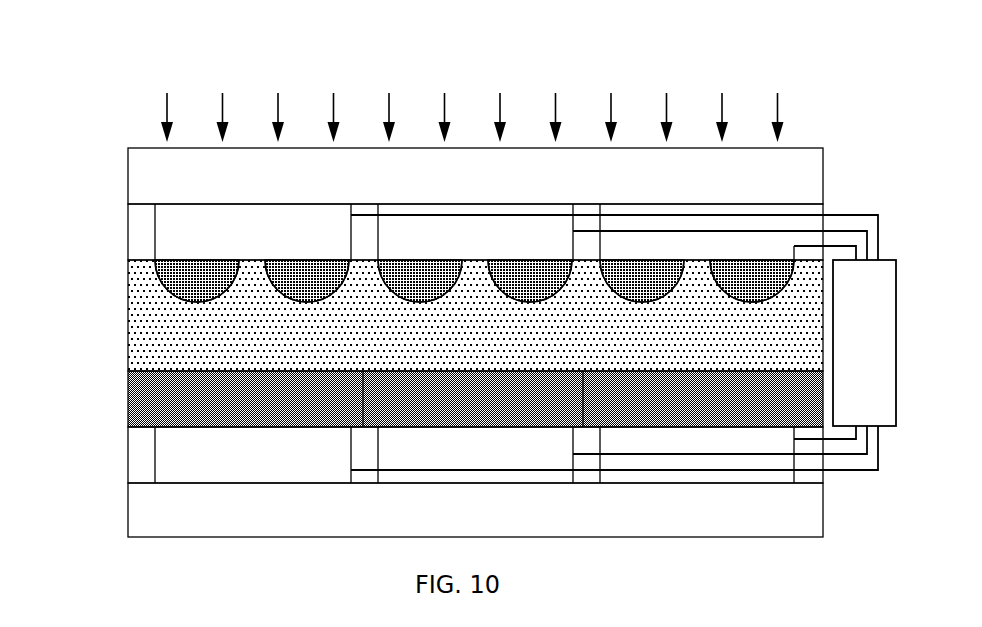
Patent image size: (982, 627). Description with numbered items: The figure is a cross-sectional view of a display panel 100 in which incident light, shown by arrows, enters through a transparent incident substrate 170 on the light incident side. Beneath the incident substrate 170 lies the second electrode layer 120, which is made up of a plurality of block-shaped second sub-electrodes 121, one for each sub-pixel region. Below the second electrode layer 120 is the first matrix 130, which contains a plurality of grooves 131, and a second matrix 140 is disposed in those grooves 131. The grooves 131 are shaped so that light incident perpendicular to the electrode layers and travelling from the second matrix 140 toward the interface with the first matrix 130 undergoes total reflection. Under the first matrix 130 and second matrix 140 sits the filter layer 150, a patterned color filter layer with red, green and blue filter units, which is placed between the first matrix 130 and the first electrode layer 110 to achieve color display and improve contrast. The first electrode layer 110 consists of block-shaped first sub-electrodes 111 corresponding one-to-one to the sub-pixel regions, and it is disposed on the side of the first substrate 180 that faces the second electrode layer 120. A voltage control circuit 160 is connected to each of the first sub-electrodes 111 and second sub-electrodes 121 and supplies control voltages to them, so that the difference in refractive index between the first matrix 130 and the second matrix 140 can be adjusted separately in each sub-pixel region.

The display panel 100 is at (85, 128).
The first electrode layer 110 is at (128, 465).
The first sub-electrodes 111 is at (155, 430).
The second electrode layer 120 is at (128, 240).
The second sub-electrodes 121 is at (155, 207).
The first matrix 130 is at (155, 350).
The grooves 131 is at (177, 298).
The second matrix 140 is at (197, 270).
The filter layer 150 is at (145, 400).
The voltage control circuit 160 is at (882, 353).
The incident substrate 170 is at (145, 158).
The first substrate 180 is at (145, 510).